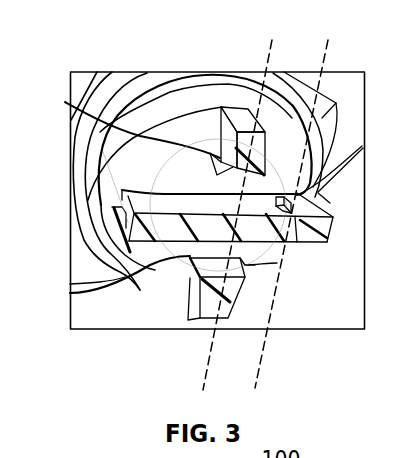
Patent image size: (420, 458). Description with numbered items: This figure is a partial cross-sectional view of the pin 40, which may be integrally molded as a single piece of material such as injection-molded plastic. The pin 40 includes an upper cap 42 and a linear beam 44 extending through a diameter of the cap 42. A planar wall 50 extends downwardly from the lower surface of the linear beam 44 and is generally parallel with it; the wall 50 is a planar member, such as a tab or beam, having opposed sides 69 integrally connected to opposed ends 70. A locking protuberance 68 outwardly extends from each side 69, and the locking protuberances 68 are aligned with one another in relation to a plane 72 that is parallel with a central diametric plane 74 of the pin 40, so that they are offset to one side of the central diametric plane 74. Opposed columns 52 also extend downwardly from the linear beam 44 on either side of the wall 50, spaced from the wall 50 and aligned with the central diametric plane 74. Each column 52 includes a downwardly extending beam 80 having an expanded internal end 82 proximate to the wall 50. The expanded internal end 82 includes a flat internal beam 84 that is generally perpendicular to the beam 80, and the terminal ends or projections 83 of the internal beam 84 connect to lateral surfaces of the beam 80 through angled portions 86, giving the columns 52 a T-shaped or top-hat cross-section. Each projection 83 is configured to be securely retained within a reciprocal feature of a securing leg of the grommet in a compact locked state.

The pin 40 is at (116, 20).
The upper cap 42 is at (78, 297).
The linear beam 44 is at (346, 102).
The planar wall 50 is at (124, 226).
The columns 52 is at (252, 126).
The locking protuberance 68 is at (318, 193).
The opposed sides 69 is at (122, 190).
The opposed ends 70 is at (113, 214).
The plane 72 is at (333, 52).
The central diametric plane 74 is at (268, 42).
The downwardly extending beam 80 is at (222, 106).
The expanded internal end 82 is at (65, 102).
The terminal ends or projections 83 is at (72, 293).
The flat internal beam 84 is at (277, 263).
The angled portions 86 is at (96, 72).